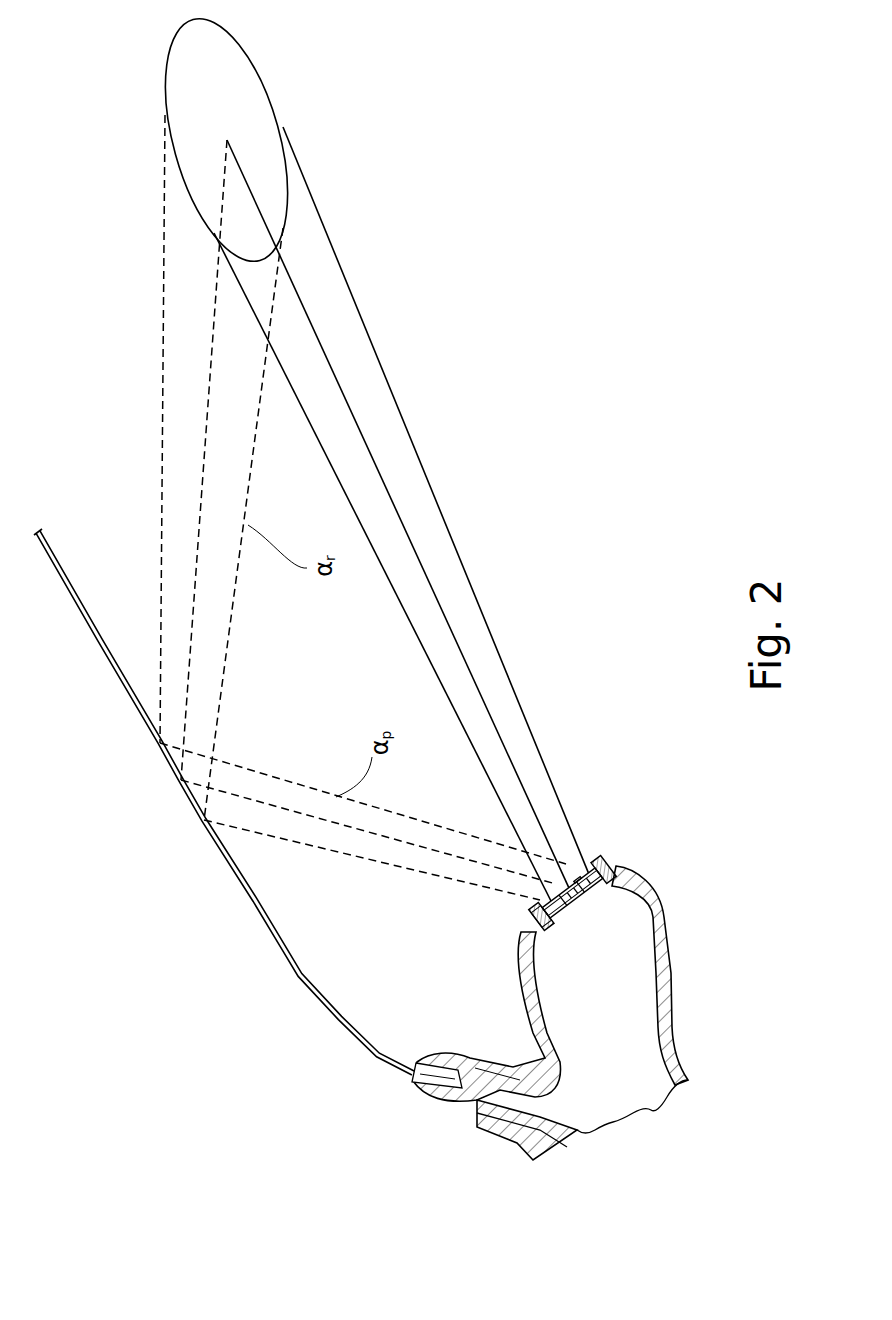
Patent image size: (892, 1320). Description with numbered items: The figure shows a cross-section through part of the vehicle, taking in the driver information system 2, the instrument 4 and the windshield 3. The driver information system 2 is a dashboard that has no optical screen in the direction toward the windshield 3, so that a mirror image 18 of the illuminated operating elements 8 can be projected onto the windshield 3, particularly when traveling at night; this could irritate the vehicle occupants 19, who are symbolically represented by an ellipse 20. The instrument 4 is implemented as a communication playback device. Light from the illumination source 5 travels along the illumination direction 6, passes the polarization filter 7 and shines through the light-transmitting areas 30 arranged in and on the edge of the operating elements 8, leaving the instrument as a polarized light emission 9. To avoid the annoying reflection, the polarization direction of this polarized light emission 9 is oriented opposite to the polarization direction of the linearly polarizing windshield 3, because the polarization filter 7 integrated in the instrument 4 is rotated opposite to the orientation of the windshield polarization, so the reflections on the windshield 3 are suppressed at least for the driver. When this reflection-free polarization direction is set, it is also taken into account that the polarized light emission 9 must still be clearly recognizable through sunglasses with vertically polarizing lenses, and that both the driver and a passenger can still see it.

The driver information system 2 is at (530, 915).
The windshield 3 is at (266, 930).
The instrument 4 is at (613, 851).
The illumination source 5 is at (528, 902).
The illumination direction 6 is at (618, 877).
The polarization filter 7 is at (605, 895).
The operating elements 8 is at (565, 925).
The polarized light emission 9 is at (579, 873).
The mirror image 18 is at (181, 790).
The vehicle occupants 19 is at (157, 108).
The ellipse 20 is at (253, 123).
The light-transmitting areas 30 is at (594, 915).